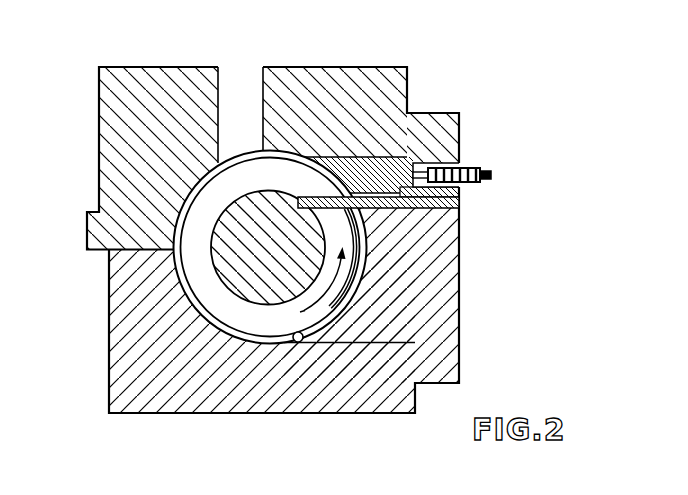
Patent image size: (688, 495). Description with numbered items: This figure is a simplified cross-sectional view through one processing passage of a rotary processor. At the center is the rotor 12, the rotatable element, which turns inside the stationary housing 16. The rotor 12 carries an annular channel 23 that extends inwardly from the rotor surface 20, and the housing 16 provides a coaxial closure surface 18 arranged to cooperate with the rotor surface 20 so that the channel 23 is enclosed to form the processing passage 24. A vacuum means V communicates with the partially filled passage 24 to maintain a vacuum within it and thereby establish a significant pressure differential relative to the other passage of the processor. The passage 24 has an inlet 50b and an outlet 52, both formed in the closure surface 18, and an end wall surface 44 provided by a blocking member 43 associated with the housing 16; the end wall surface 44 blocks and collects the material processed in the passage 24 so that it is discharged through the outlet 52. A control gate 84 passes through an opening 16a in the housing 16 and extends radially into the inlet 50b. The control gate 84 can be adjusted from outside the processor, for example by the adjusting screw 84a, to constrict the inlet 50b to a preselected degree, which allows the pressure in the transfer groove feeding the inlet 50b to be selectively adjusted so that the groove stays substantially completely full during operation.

The rotor 12 is at (231, 218).
The housing 16 is at (110, 387).
The opening 16a is at (457, 194).
The closure surface 18 is at (296, 336).
The rotor surface 20 is at (223, 333).
The annular channel 23 is at (195, 262).
The processing passage 24 is at (197, 297).
The blocking member 43 is at (455, 201).
The end wall surface 44 is at (356, 230).
The inlet 50b is at (335, 170).
The outlet 52 is at (367, 265).
The control gate 84 is at (395, 169).
The adjusting screw 84a is at (483, 166).
The vacuum means V is at (243, 82).